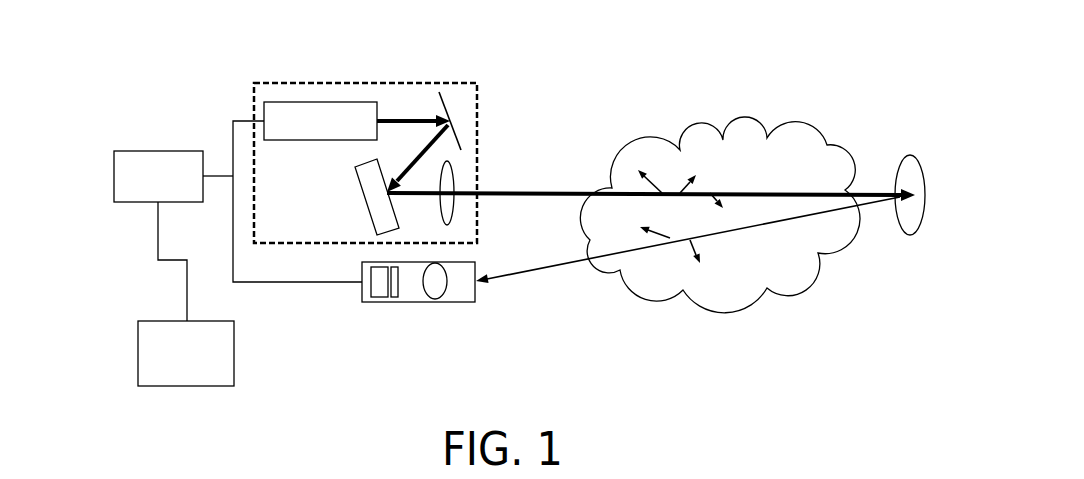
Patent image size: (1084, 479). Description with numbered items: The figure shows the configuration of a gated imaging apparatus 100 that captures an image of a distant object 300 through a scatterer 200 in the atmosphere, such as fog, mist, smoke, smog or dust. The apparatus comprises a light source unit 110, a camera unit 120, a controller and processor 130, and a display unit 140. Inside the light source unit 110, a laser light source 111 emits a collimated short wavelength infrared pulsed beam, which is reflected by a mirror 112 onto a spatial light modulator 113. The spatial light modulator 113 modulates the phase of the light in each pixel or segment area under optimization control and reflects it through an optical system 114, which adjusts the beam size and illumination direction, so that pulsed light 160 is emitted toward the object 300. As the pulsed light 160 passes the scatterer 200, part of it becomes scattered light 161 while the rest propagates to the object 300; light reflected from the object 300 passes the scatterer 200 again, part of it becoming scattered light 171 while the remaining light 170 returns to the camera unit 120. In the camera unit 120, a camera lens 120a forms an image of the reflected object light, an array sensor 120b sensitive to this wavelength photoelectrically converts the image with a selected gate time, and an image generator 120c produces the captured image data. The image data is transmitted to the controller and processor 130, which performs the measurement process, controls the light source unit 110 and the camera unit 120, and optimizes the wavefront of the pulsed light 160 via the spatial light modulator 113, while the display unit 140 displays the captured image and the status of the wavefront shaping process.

The gated imaging apparatus 100 is at (118, 65).
The light source unit 110 is at (357, 79).
The laser light source 111 is at (302, 125).
The mirror 112 is at (447, 97).
The spatial light modulator 113 is at (373, 193).
The optical system 114 is at (448, 222).
The camera unit 120 is at (362, 288).
The camera lens 120a is at (436, 299).
The array sensor 120b is at (398, 302).
The image generator 120c is at (378, 302).
The controller and processor 130 is at (123, 177).
The display unit 140 is at (148, 345).
The pulsed light 160 is at (552, 190).
The scattered light 161 is at (680, 182).
The reflected light 170 is at (525, 275).
The scattered light 171 is at (670, 252).
The scatterer 200 is at (713, 122).
The object 300 is at (909, 158).